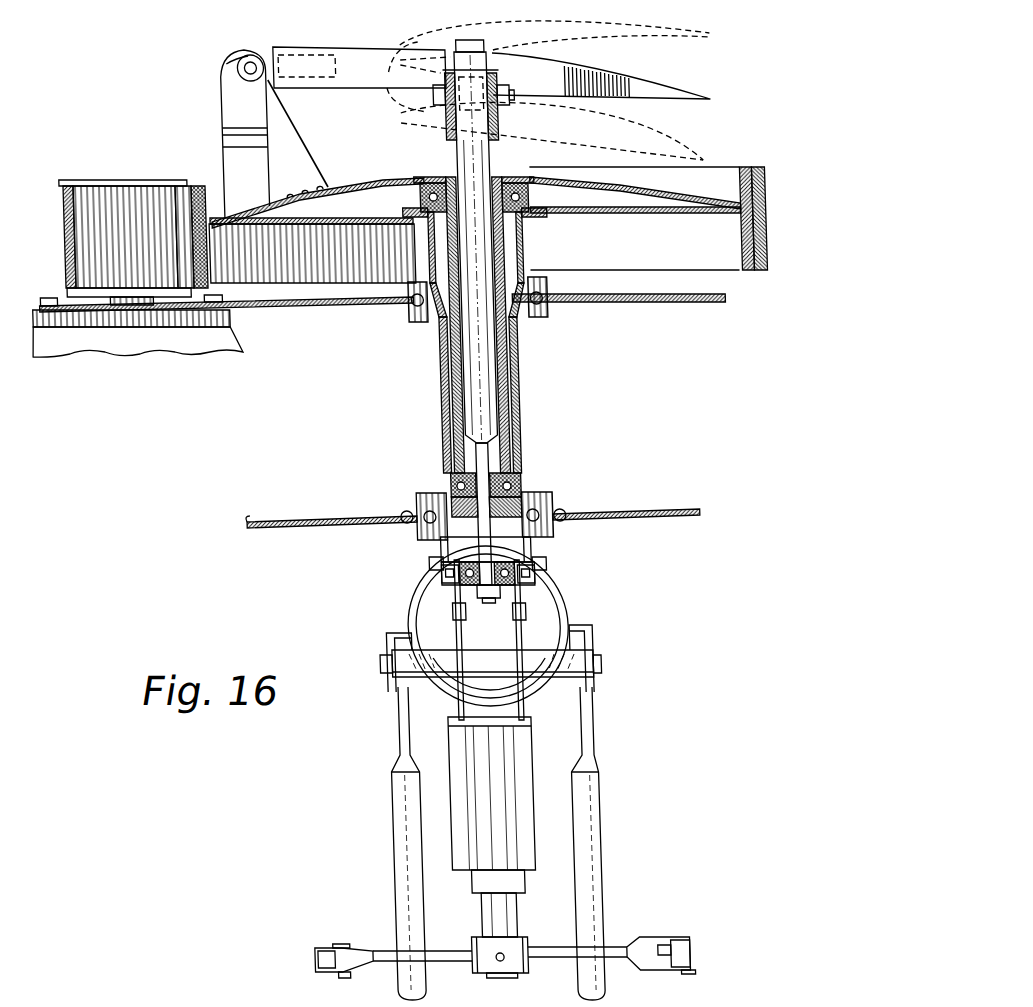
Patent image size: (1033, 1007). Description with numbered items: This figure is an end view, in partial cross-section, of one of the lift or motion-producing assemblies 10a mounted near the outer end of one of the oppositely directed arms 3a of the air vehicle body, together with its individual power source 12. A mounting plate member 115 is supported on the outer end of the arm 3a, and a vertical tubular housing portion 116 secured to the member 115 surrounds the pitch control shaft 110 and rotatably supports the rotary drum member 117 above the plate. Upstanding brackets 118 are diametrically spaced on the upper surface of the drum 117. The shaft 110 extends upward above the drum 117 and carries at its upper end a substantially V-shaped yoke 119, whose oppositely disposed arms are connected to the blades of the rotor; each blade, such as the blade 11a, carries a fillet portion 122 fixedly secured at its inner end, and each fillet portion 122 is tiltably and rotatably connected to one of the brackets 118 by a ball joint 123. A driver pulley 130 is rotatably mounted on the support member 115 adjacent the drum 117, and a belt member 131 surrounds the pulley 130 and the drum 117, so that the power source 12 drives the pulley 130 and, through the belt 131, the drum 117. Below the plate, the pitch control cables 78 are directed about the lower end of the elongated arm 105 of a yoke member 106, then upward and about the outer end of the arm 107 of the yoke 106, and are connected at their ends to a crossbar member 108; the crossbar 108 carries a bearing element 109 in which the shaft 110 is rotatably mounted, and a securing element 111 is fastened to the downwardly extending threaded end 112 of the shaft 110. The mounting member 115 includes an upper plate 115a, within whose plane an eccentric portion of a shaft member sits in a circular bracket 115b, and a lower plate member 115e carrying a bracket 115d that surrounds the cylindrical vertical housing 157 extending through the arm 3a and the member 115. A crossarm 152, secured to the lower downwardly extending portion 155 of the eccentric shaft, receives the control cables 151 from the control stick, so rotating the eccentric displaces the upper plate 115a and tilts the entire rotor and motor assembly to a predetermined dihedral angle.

The arm 3a is at (572, 610).
The lift or motion-producing assembly 10a is at (139, 386).
The blade 11a is at (643, 82).
The power source 12 is at (200, 352).
The pitch control cables 78 is at (450, 690).
The elongated arm 105 is at (583, 805).
The yoke member 106 is at (581, 655).
The arm 107 is at (441, 668).
The crossbar member 108 is at (428, 564).
The bearing element 109 is at (443, 580).
The pitch control shaft 110 is at (491, 398).
The securing element 111 is at (498, 590).
The threaded end 112 is at (486, 603).
The mounting plate member 115 is at (246, 522).
The upper plate 115a is at (358, 308).
The circular bracket 115b is at (559, 306).
The bracket 115d is at (554, 496).
The lower plate member 115e is at (680, 510).
The vertical tubular housing portion 116 is at (446, 372).
The rotary drum member 117 is at (747, 178).
The upstanding brackets 118 is at (237, 106).
The V-shaped yoke 119 is at (508, 138).
The fillet portion 122 is at (346, 47).
The ball joint 123 is at (283, 80).
The driver pulley 130 is at (143, 186).
The belt member 131 is at (770, 252).
The control cables 151 is at (303, 960).
The crossarm 152 is at (637, 937).
The lower downwardly extending portion 155 is at (505, 915).
The cylindrical vertical housing 157 is at (452, 772).